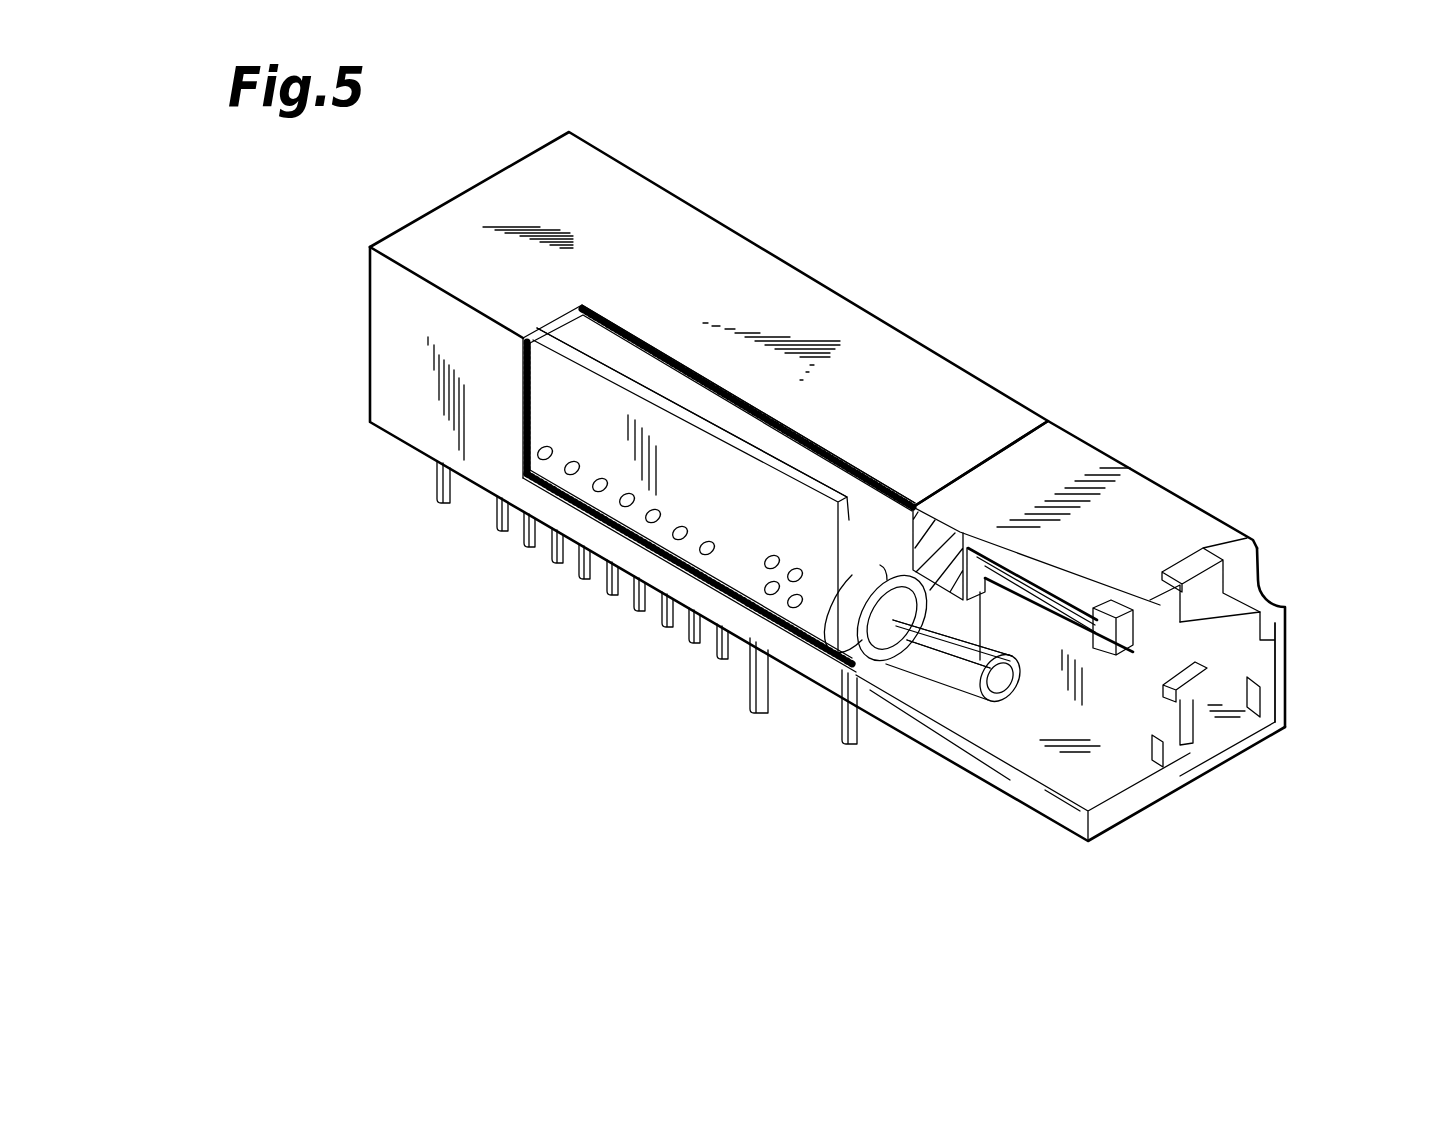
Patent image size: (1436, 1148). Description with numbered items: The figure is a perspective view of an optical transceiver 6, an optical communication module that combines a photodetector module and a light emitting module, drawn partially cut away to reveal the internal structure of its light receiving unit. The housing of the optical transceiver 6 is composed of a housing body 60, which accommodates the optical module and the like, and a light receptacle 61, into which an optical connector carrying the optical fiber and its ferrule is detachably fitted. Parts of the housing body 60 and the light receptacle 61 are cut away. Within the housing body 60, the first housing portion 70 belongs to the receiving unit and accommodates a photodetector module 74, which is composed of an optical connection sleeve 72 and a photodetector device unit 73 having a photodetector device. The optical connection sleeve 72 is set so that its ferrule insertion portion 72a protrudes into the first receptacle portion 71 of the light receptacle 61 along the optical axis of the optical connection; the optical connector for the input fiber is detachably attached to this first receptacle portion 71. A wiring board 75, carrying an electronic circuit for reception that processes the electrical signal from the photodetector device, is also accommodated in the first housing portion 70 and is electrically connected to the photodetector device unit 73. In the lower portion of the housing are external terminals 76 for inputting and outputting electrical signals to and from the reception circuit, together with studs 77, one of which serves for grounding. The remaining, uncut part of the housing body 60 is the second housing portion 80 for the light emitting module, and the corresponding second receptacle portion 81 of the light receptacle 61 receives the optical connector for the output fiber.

The optical transceiver 6 is at (1010, 345).
The housing body 60 is at (705, 254).
The light receptacle 61 is at (1170, 508).
The first housing portion 70 is at (668, 393).
The first receptacle portion 71 is at (1120, 784).
The optical connection sleeve 72 is at (935, 602).
The ferrule insertion portion 72a is at (950, 667).
The photodetector device unit 73 is at (880, 552).
The photodetector module 74 is at (975, 402).
The wiring board 75 is at (587, 410).
The external terminals 76 is at (740, 670).
The studs 77 is at (443, 503).
The second housing portion 80 is at (798, 322).
The second receptacle portion 81 is at (1210, 738).